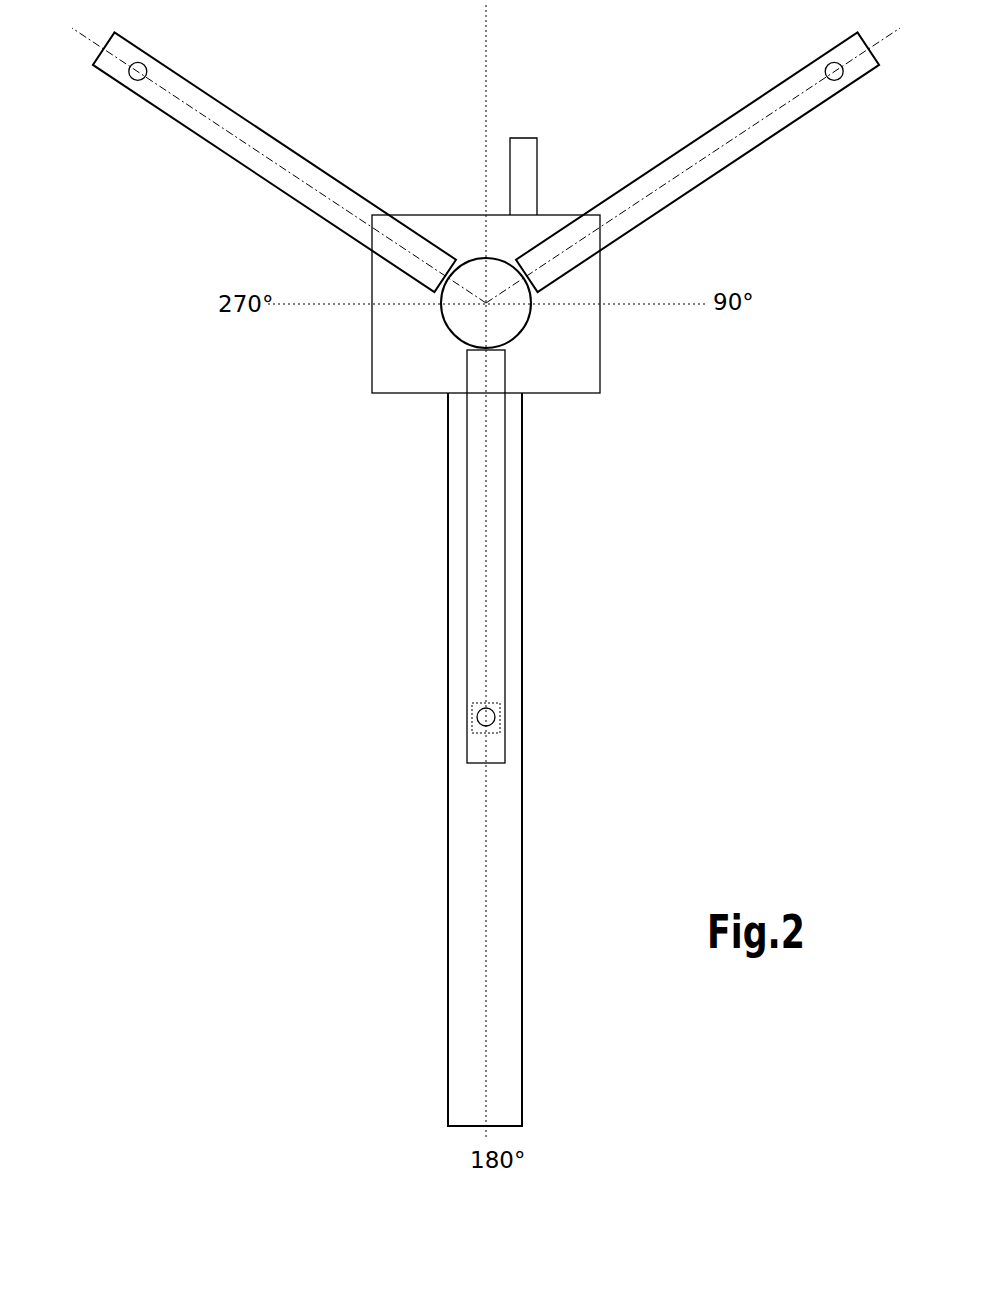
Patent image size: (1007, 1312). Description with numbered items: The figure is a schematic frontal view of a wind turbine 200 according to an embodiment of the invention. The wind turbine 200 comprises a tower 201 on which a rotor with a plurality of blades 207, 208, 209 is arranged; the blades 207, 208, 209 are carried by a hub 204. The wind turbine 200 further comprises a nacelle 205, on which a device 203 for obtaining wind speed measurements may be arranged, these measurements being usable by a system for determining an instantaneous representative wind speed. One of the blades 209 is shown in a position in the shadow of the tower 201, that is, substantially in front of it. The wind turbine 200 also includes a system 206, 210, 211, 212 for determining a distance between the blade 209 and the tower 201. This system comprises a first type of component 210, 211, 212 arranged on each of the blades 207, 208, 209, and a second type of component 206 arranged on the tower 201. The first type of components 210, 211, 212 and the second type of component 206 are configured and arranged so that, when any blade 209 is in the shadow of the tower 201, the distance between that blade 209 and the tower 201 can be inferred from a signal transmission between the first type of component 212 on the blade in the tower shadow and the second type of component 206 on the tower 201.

The wind turbine 200 is at (203, 516).
The tower 201 is at (465, 928).
The device for obtaining wind speed measurements 203 is at (527, 160).
The hub 204 is at (463, 328).
The nacelle 205 is at (378, 333).
The second type of component 206 is at (472, 706).
The blade 207 is at (210, 108).
The blade 208 is at (753, 133).
The blade 209 is at (495, 607).
The first type of component 210 is at (152, 60).
The first type of component 211 is at (827, 58).
The first type of component 212 is at (500, 714).